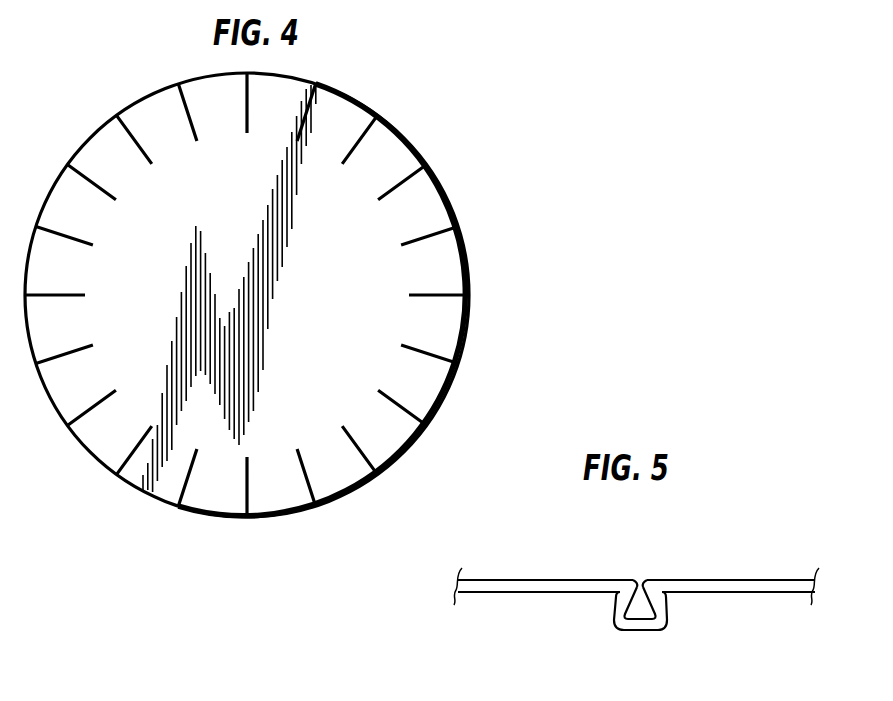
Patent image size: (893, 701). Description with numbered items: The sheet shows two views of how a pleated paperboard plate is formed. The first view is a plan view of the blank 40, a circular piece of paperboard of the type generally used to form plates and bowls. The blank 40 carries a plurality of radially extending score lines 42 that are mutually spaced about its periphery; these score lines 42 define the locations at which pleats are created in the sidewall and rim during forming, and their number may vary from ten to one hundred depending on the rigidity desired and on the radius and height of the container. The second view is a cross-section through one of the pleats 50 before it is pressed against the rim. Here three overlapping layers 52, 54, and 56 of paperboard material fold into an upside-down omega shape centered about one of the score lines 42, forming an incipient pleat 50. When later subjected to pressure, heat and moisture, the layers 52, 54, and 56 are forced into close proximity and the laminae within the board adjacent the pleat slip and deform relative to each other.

In FIG. 4, the blank 40 is at (453, 402).
In FIG. 4, the score lines 42 is at (417, 242).
In FIG. 5, the pleat 50 is at (636, 594).
In FIG. 5, the first overlapping layer 52 is at (640, 577).
In FIG. 5, the second overlapping layer 54 is at (614, 605).
In FIG. 5, the third overlapping layer 56 is at (628, 631).